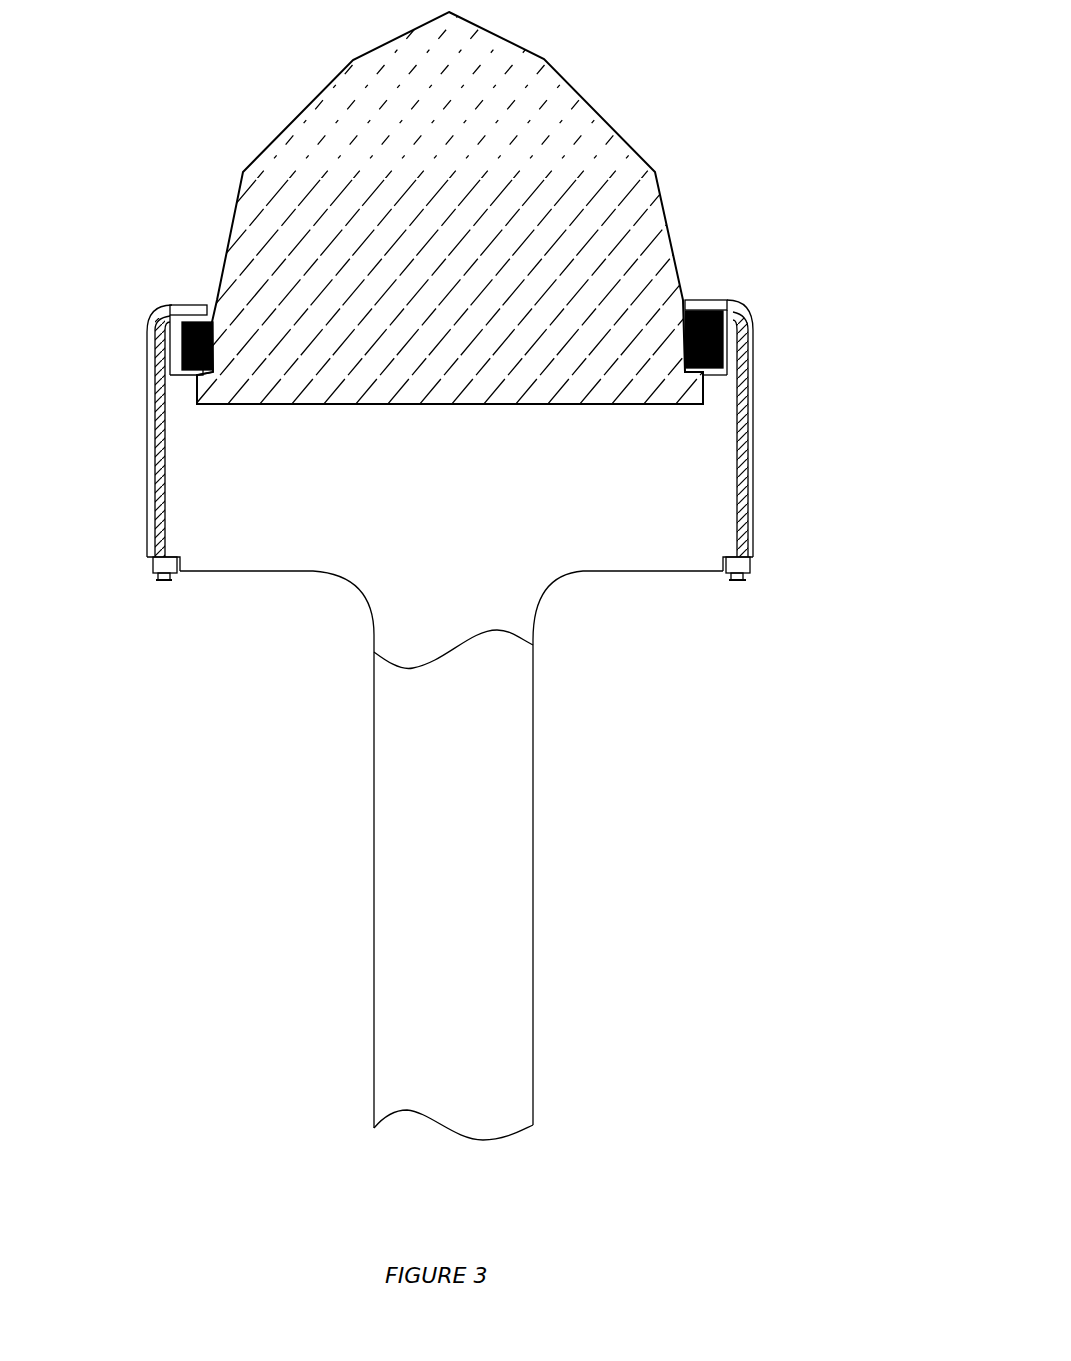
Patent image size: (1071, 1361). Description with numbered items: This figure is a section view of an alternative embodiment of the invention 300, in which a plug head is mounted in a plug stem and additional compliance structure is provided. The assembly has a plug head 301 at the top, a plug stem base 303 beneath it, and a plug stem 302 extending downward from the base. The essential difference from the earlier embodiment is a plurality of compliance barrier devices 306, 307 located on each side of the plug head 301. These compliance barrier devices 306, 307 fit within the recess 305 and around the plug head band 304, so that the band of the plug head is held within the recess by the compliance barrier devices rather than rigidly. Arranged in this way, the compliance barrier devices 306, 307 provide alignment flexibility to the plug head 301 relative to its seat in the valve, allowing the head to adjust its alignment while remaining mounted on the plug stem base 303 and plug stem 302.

The embodiment of the invention 300 is at (758, 645).
The plug head 301 is at (638, 192).
The plug stem 302 is at (518, 863).
The plug stem base 303 is at (645, 550).
The plug head band 304 is at (185, 340).
The recess 305 is at (194, 383).
The compliance barrier device 306 is at (173, 325).
The compliance barrier device 307 is at (170, 371).